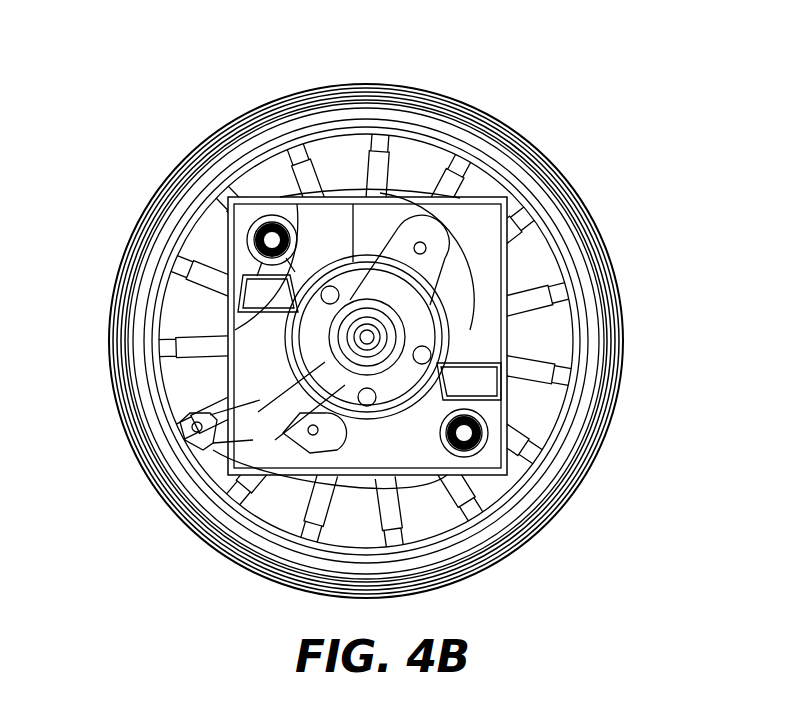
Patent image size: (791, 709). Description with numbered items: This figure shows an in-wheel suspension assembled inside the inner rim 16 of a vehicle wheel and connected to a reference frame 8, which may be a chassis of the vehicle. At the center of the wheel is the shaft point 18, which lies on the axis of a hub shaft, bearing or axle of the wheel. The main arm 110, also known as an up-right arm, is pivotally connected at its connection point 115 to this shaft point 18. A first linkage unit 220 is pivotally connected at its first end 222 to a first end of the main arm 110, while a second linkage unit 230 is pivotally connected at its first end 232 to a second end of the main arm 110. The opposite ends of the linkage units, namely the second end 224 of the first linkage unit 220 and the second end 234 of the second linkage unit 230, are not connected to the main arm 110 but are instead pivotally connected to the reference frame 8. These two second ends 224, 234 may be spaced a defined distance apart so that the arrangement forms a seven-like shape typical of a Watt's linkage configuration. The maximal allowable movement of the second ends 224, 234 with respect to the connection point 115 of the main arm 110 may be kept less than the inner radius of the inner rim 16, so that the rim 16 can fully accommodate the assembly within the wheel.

The inner rim 16 is at (560, 245).
The reference frame 8 is at (487, 320).
The first end of first linkage unit 222 is at (425, 247).
The first linkage unit 220 is at (352, 212).
The main arm 110 is at (278, 116).
The second end of first linkage unit 224 is at (268, 241).
The shaft point 18 is at (360, 338).
The connection point 115 is at (205, 398).
The first end of second linkage unit 232 is at (237, 477).
The second linkage unit 230 is at (228, 541).
The second end of second linkage unit 234 is at (472, 438).